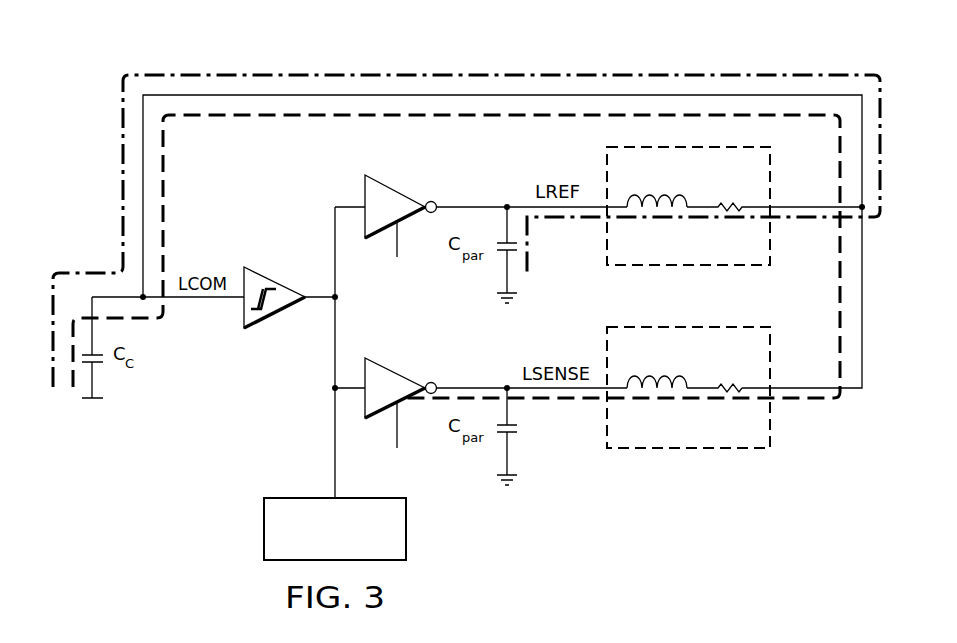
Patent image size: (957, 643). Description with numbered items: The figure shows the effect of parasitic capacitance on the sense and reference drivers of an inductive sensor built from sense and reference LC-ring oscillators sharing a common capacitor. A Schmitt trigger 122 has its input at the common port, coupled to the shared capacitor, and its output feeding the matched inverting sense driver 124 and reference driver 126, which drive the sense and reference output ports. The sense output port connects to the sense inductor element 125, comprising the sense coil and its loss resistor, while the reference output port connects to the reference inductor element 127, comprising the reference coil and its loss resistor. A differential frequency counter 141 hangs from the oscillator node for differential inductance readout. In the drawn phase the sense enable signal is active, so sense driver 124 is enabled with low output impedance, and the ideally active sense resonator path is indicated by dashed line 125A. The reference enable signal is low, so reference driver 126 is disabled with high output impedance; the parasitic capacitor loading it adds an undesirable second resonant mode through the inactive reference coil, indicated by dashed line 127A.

The Schmitt trigger 122 is at (281, 280).
The Lsense driver 124 is at (405, 378).
The inductor element 125 is at (716, 456).
The dashed line 125A is at (823, 399).
The Lref driver 126 is at (410, 196).
The inductor element 127 is at (602, 166).
The dashed line 127A is at (533, 73).
The differential frequency counter 141 is at (264, 530).